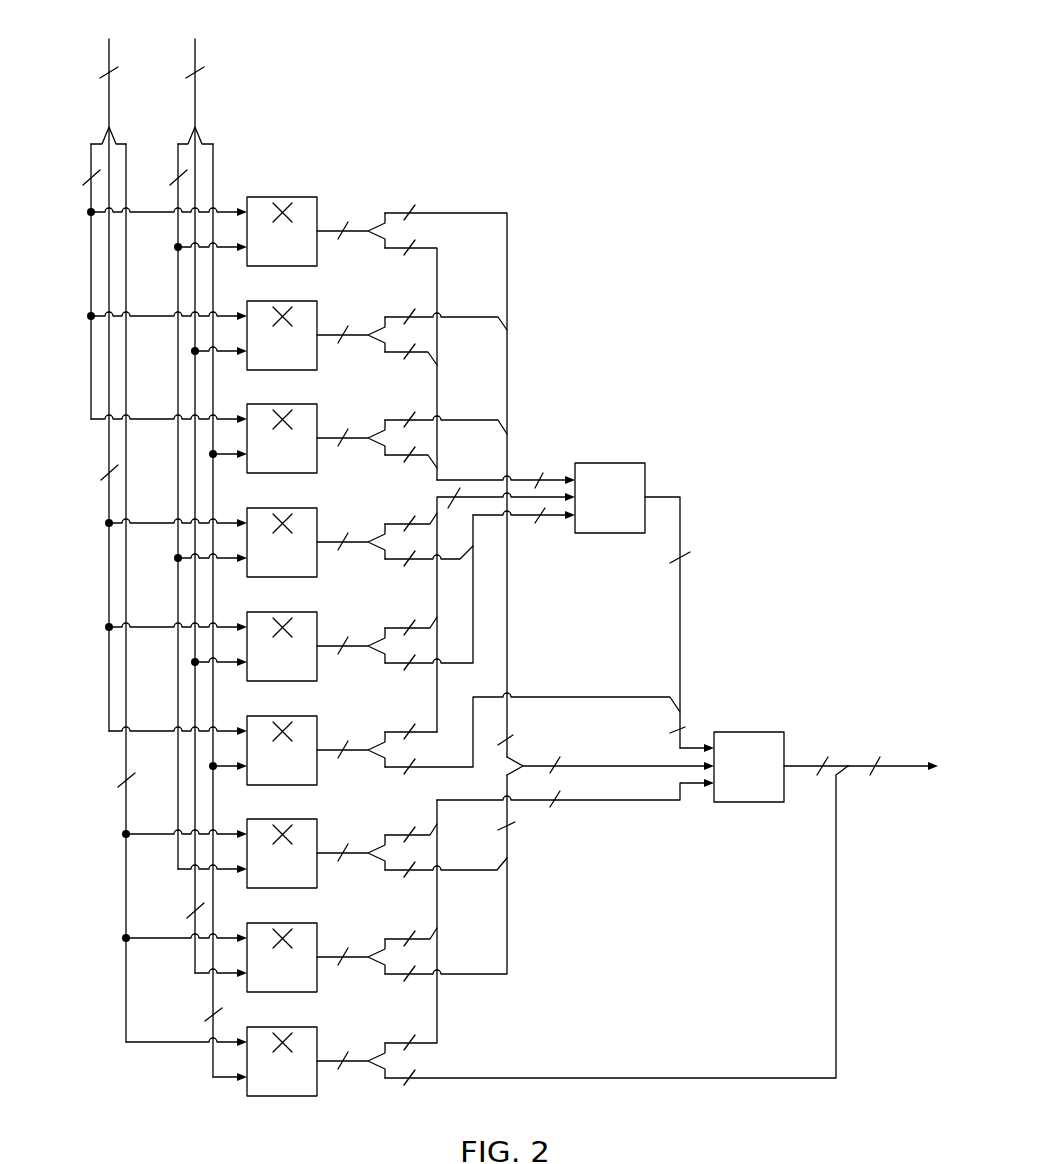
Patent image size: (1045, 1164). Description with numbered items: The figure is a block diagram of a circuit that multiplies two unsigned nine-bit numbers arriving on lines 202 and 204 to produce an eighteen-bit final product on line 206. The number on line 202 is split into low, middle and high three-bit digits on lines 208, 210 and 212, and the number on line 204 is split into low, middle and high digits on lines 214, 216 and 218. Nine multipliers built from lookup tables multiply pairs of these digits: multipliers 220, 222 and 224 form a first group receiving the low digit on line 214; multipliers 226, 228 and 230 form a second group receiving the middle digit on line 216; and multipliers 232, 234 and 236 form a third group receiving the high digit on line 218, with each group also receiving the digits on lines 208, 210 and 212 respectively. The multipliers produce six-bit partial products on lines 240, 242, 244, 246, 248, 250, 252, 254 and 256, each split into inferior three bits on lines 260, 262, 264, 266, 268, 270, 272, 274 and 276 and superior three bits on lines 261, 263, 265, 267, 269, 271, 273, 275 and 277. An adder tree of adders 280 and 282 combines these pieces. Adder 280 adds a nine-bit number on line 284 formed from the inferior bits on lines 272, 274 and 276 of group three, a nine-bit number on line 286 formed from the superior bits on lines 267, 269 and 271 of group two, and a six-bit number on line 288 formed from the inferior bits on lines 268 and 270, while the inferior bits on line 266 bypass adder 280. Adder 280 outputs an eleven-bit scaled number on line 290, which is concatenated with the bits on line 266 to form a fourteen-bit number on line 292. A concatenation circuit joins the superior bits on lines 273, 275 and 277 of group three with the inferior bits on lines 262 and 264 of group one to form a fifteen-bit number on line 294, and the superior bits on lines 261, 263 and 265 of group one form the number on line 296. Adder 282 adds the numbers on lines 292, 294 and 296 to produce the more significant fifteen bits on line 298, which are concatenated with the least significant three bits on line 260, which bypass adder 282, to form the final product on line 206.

The line 202 is at (194, 48).
The line 204 is at (108, 48).
The line 206 is at (918, 762).
The line 208 is at (212, 1062).
The line 210 is at (194, 957).
The line 212 is at (177, 852).
The line 214 is at (125, 1025).
The line 216 is at (108, 716).
The line 218 is at (91, 403).
The multiplier 220 is at (305, 1027).
The multiplier 222 is at (305, 923).
The multiplier 224 is at (305, 819).
The multiplier 226 is at (305, 716).
The multiplier 228 is at (305, 612).
The multiplier 230 is at (305, 508).
The multiplier 232 is at (305, 404).
The multiplier 234 is at (305, 301).
The multiplier 236 is at (305, 197).
The line 240 is at (355, 1055).
The line 242 is at (355, 951).
The line 244 is at (355, 847).
The line 246 is at (355, 744).
The line 248 is at (355, 640).
The line 250 is at (355, 536).
The line 252 is at (355, 432).
The line 254 is at (355, 329).
The line 256 is at (355, 225).
The line 260 is at (393, 1083).
The line 261 is at (424, 1039).
The line 262 is at (393, 979).
The line 263 is at (424, 935).
The line 264 is at (393, 875).
The line 265 is at (424, 831).
The line 266 is at (393, 772).
The line 267 is at (424, 728).
The line 268 is at (393, 668).
The line 269 is at (424, 624).
The line 270 is at (393, 564).
The line 271 is at (424, 520).
The line 272 is at (393, 460).
The line 273 is at (424, 416).
The line 274 is at (393, 357).
The line 275 is at (424, 313).
The line 276 is at (393, 253).
The line 277 is at (424, 209).
The adder 280 is at (613, 463).
The adder 282 is at (752, 732).
The line 284 is at (553, 478).
The line 286 is at (487, 497).
The line 288 is at (557, 517).
The line 290 is at (667, 497).
The line 292 is at (690, 748).
The line 294 is at (625, 762).
The line 296 is at (650, 798).
The line 298 is at (793, 768).